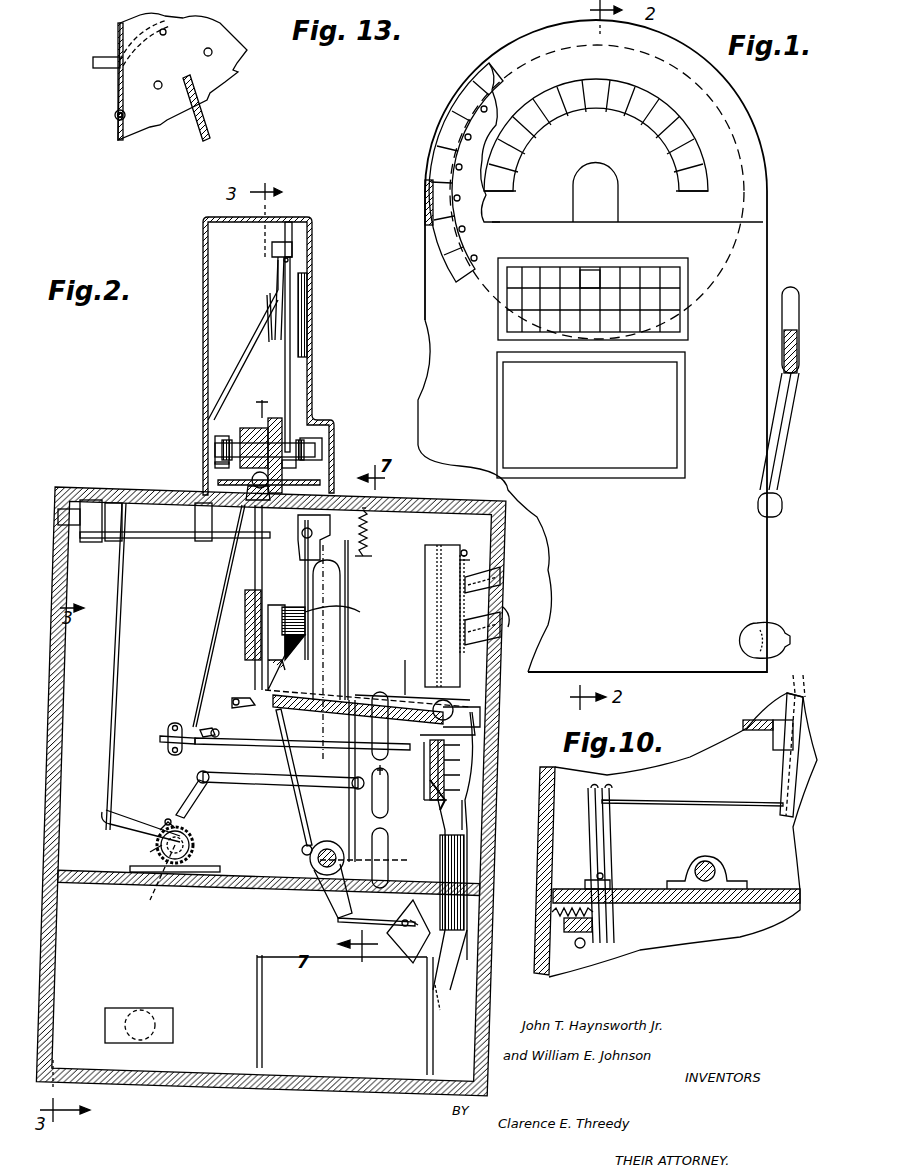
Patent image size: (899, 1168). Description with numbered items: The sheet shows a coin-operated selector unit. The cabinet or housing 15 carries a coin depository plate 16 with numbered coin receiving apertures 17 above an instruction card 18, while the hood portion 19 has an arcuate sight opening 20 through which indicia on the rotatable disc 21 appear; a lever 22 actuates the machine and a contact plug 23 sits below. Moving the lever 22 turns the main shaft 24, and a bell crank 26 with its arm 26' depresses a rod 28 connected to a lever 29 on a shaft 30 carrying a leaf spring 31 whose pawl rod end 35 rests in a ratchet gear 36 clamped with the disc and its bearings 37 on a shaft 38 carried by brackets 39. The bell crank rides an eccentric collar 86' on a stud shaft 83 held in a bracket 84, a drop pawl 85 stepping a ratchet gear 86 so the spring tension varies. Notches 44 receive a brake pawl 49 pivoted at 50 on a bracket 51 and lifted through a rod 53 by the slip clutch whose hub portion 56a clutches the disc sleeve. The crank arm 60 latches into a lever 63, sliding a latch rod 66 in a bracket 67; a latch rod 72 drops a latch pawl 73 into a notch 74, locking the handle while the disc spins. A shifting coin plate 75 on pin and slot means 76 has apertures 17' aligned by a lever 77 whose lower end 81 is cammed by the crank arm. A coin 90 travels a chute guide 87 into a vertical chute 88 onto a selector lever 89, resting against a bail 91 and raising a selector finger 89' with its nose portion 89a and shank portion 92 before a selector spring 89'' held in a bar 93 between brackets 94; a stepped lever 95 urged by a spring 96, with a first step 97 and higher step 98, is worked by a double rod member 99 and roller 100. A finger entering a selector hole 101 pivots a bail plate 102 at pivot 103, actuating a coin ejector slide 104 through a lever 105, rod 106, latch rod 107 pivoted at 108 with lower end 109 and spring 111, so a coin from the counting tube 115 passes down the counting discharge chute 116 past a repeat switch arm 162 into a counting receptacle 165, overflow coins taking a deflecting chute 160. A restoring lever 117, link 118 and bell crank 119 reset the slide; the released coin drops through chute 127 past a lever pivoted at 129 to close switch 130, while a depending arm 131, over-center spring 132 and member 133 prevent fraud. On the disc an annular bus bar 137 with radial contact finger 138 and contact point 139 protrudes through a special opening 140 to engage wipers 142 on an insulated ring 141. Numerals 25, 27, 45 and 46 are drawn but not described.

In FIG. 1, the cabinet or housing 15 is at (760, 248).
In FIG. 1, the plate 16 is at (660, 262).
In FIG. 1, the coin receiving apertures 17 is at (602, 264).
In FIG. 2, the coin receiving apertures 17 is at (516, 621).
In FIG. 2, the coin apertures 17' is at (482, 628).
In FIG. 1, the instruction card 18 is at (683, 373).
In FIG. 1, the hood portion 19 is at (748, 120).
In FIG. 2, the hood portion 19 is at (203, 352).
In FIG. 1, the arcuate sight opening 20 is at (648, 98).
In FIG. 2, the arcuate sight opening 20 is at (308, 310).
In FIG. 1, the rotatable disc 21 is at (480, 214).
In FIG. 2, the rotatable disc 21 is at (291, 382).
In FIG. 1, the lever 22 is at (786, 403).
In FIG. 1, the contact plug 23 is at (760, 623).
In FIG. 2, the contact plug 23 is at (142, 1012).
In FIG. 1, the main shaft 24 is at (782, 505).
In FIG. 2, the main shaft 24 is at (318, 878).
In FIG. 10, the main shaft 24 is at (712, 866).
In FIG. 2, the rod 25 is at (345, 800).
In FIG. 2, the bell crank 26 is at (202, 805).
In FIG. 2, the arm 26' is at (132, 831).
In FIG. 2, the link 27 is at (262, 787).
In FIG. 2, the rod 28 is at (112, 688).
In FIG. 2, the lever 29 is at (122, 520).
In FIG. 2, the shaft 30 is at (160, 540).
In FIG. 2, the leaf spring 31 is at (255, 540).
In FIG. 2, the offset end 35 is at (265, 400).
In FIG. 2, the ratchet gear 36 is at (272, 418).
In FIG. 2, the bearings 37 is at (250, 428).
In FIG. 2, the shaft 38 is at (322, 436).
In FIG. 2, the brackets 39 is at (296, 463).
In FIG. 13, the notches 44 is at (155, 130).
In FIG. 2, the lever 45 is at (298, 810).
In FIG. 2, the pivot 46 is at (302, 850).
In FIG. 2, the brake pawl 49 is at (288, 257).
In FIG. 2, the pivot 50 is at (272, 246).
In FIG. 2, the bracket 51 is at (250, 343).
In FIG. 2, the rod 53 is at (268, 325).
In FIG. 2, the hub portion 56a is at (268, 479).
In FIG. 2, the crank arm 60 is at (356, 855).
In FIG. 2, the lever 63 is at (465, 810).
In FIG. 2, the latch rod 66 is at (280, 747).
In FIG. 2, the bracket 67 is at (172, 724).
In FIG. 2, the latch rod 72 is at (222, 620).
In FIG. 2, the latch pawl 73 is at (216, 728).
In FIG. 2, the notch 74 is at (185, 746).
In FIG. 2, the shifting coin plate 75 is at (476, 556).
In FIG. 2, the pin and slot means 76 is at (466, 550).
In FIG. 2, the lever 77 is at (432, 795).
In FIG. 2, the lower end 81 is at (409, 911).
In FIG. 2, the stud shaft 83 is at (194, 848).
In FIG. 2, the bracket 84 is at (222, 870).
In FIG. 2, the drop pawl 85 is at (168, 820).
In FIG. 2, the ratchet gear 86 is at (140, 854).
In FIG. 2, the eccentric collar 86' is at (159, 878).
In FIG. 2, the chute guide 87 is at (500, 575).
In FIG. 2, the vertical chute 88 is at (436, 595).
In FIG. 2, the selector lever 89 is at (412, 677).
In FIG. 2, the selector finger 89' is at (315, 647).
In FIG. 2, the selector spring 89'' is at (295, 603).
In FIG. 2, the nose portion 89a is at (395, 619).
In FIG. 2, the coin 90 is at (453, 705).
In FIG. 2, the bail 91 is at (461, 719).
In FIG. 2, the shank portion 92 is at (320, 700).
In FIG. 2, the bar 93 is at (320, 525).
In FIG. 2, the brackets 94 is at (270, 495).
In FIG. 2, the stepped lever 95 is at (342, 568).
In FIG. 2, the spring 96 is at (368, 534).
In FIG. 2, the first step 97 is at (366, 512).
In FIG. 2, the higher step 98 is at (370, 498).
In FIG. 2, the double rod member 99 is at (349, 650).
In FIG. 2, the roller 100 is at (372, 556).
In FIG. 13, the selector holes 101 is at (166, 68).
In FIG. 2, the bail plate 102 is at (262, 628).
In FIG. 2, the pivot 103 is at (240, 692).
In FIG. 10, the pivot 103 is at (773, 738).
In FIG. 2, the coin ejector slide 104 is at (445, 935).
In FIG. 10, the coin ejector slide 104 is at (578, 950).
In FIG. 10, the lever 105 is at (783, 790).
In FIG. 10, the rod 106 is at (705, 800).
In FIG. 10, the latch rod 107 is at (606, 838).
In FIG. 10, the pivot 108 is at (603, 880).
In FIG. 10, the lower end portion 109 is at (608, 923).
In FIG. 2, the spring 111 is at (500, 929).
In FIG. 10, the spring 111 is at (675, 835).
In FIG. 2, the counting tube 115 is at (465, 875).
In FIG. 2, the counting discharge chute 116 is at (437, 1002).
In FIG. 2, the restoring lever 117 is at (345, 920).
In FIG. 2, the link 118 is at (400, 921).
In FIG. 2, the bell crank 119 is at (408, 931).
In FIG. 2, the chute 127 is at (465, 760).
In FIG. 2, the pivot 129 is at (445, 785).
In FIG. 2, the switch 130 is at (430, 745).
In FIG. 2, the depending arm 131 is at (397, 769).
In FIG. 2, the over-center spring 132 is at (356, 822).
In FIG. 2, the member 133 is at (375, 840).
In FIG. 13, the annular bus bar 137 is at (112, 57).
In FIG. 13, the radial contact finger 138 is at (116, 100).
In FIG. 13, the contact point 139 is at (115, 118).
In FIG. 13, the special opening 140 is at (126, 115).
In FIG. 2, the insulated ring 141 is at (290, 222).
In FIG. 13, the wipers or contact fingers 142 is at (206, 120).
In FIG. 2, the wipers or contact fingers 142 is at (283, 647).
In FIG. 2, the deflecting chute 160 is at (470, 822).
In FIG. 2, the repeat-operating switch arm 162 is at (445, 990).
In FIG. 2, the counting receptacle 165 is at (260, 1008).